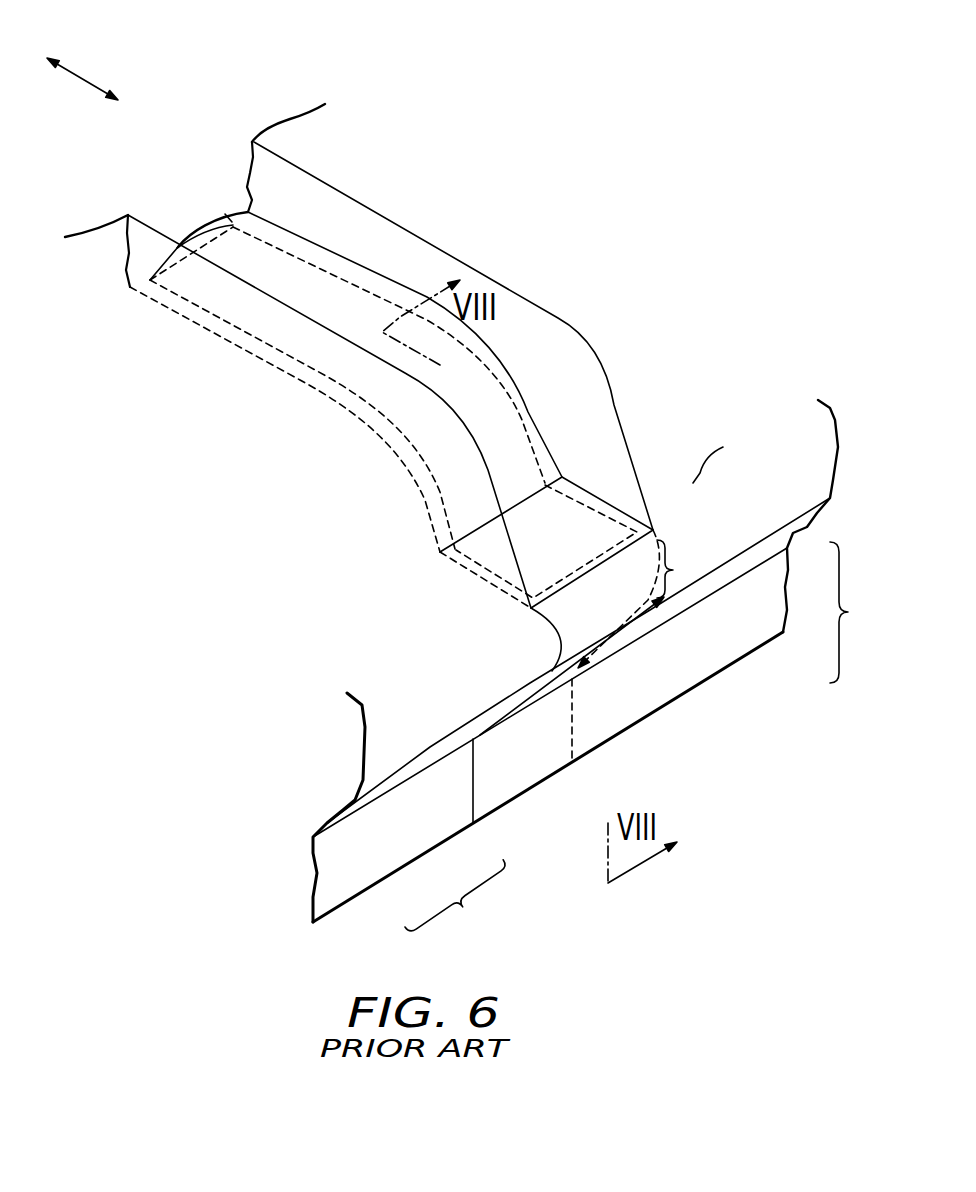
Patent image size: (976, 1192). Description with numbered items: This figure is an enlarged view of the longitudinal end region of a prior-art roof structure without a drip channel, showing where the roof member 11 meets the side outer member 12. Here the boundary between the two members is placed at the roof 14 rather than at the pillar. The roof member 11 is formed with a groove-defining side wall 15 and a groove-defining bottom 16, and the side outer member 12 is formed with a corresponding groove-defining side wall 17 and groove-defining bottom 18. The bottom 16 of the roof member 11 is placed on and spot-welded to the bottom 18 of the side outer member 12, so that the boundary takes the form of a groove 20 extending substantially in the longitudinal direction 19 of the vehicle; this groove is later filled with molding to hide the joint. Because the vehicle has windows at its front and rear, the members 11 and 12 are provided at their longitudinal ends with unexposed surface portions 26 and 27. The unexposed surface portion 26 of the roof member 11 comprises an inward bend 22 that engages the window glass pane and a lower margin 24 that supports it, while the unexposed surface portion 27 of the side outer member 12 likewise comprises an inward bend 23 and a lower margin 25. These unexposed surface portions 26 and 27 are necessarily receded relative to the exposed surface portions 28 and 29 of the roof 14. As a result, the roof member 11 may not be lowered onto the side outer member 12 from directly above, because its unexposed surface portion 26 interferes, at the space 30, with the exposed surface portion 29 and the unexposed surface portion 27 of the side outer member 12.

The roof member 11 is at (690, 434).
The side outer member 12 is at (362, 553).
The roof 14 is at (444, 187).
The groove-defining side wall 15 is at (258, 165).
The groove-defining bottom 16 is at (233, 240).
The groove-defining side wall 17 is at (140, 252).
The groove-defining bottom 18 is at (188, 230).
The longitudinal direction 19 is at (83, 78).
The groove 20 is at (181, 181).
The inward bend 22 is at (758, 550).
The inward bend 23 is at (418, 765).
The lower margin 24 is at (738, 638).
The lower margin 25 is at (393, 850).
The unexposed surface portion 26 is at (853, 612).
The unexposed surface portion 27 is at (458, 900).
The exposed surface portion 28 is at (720, 458).
The exposed surface portion 29 is at (452, 603).
The space 30 is at (641, 599).